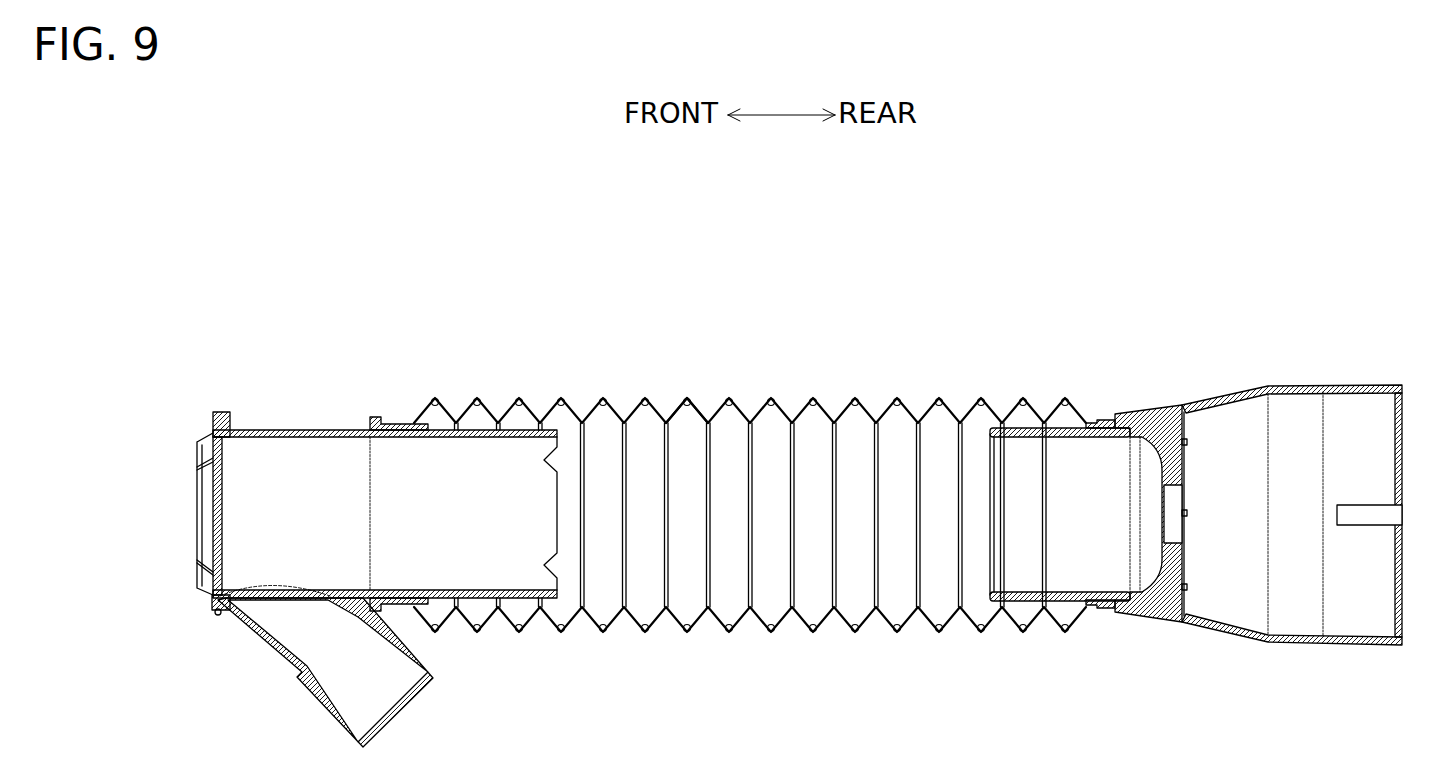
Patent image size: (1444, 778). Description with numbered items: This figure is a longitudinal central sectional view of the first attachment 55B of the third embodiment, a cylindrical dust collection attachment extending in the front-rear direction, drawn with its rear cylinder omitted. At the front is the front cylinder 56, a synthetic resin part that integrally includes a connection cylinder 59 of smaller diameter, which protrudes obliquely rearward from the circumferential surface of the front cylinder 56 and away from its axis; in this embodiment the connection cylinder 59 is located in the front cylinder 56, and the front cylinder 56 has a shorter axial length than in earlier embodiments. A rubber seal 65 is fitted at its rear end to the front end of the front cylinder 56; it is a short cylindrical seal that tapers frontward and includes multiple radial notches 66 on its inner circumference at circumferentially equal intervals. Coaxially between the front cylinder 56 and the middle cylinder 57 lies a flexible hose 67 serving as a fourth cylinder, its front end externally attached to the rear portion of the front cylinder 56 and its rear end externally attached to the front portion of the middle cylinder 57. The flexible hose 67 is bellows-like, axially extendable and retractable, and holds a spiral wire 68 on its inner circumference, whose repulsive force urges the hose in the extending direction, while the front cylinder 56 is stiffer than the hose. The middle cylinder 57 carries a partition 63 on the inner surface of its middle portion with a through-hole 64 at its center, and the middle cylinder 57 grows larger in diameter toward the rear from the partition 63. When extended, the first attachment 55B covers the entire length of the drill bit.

The first attachment 55B is at (900, 390).
The front cylinder 56 is at (312, 428).
The middle cylinder 57 is at (1262, 385).
The connection cylinder 59 is at (332, 712).
The partition 63 is at (1181, 407).
The through-hole 64 is at (1172, 504).
The rubber seal 65 is at (202, 438).
The radial notches 66 is at (198, 467).
The flexible hose 67 is at (742, 405).
The spiral wire 68 is at (684, 398).